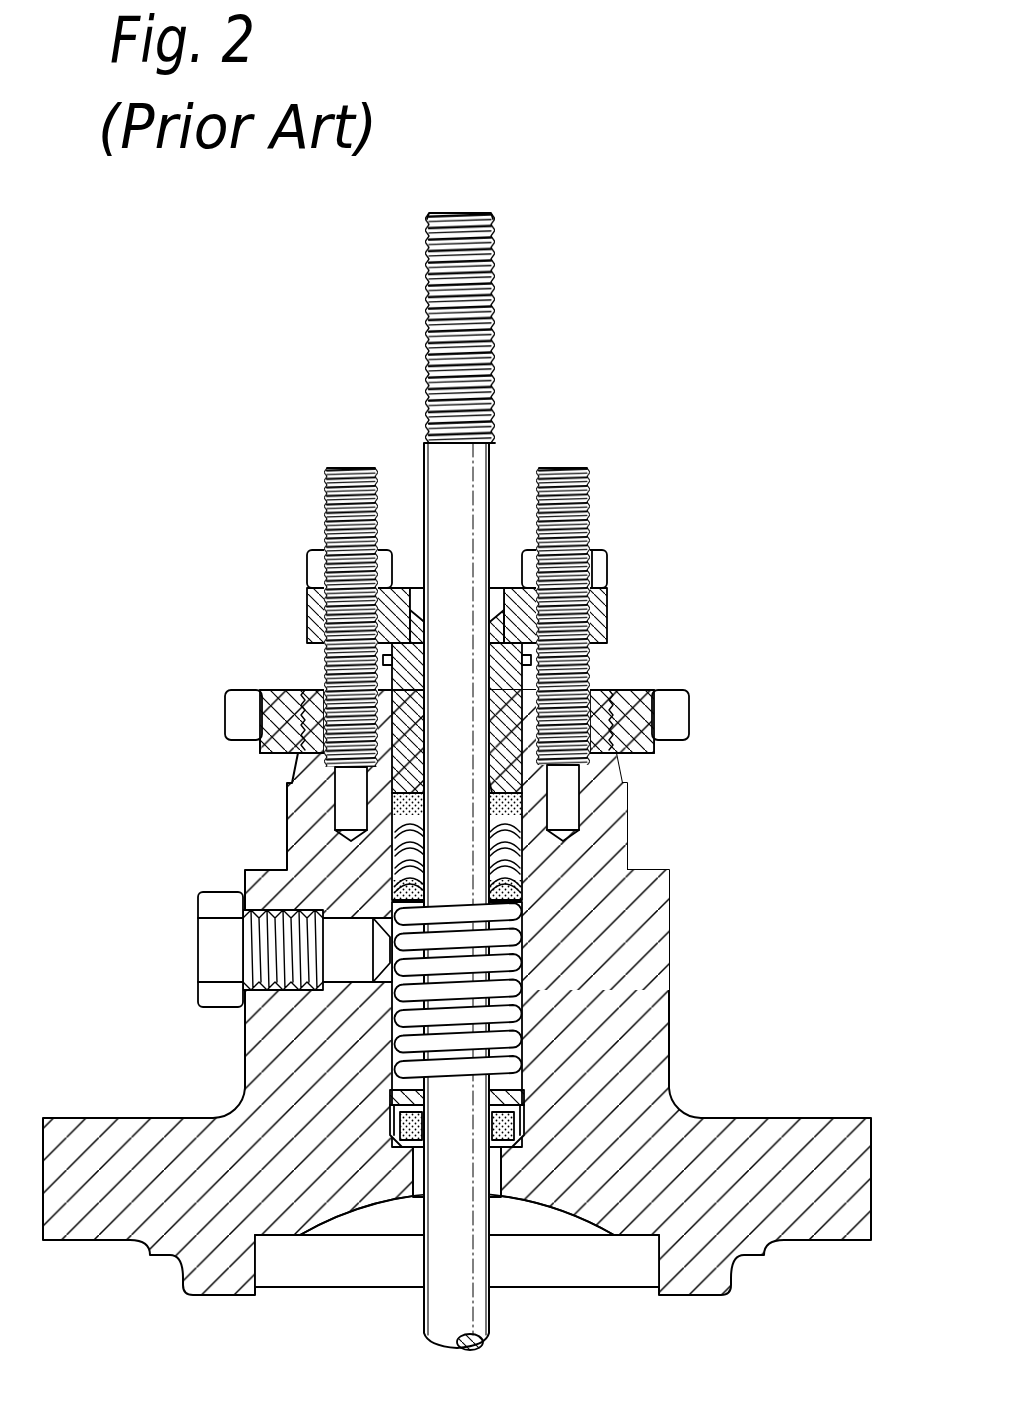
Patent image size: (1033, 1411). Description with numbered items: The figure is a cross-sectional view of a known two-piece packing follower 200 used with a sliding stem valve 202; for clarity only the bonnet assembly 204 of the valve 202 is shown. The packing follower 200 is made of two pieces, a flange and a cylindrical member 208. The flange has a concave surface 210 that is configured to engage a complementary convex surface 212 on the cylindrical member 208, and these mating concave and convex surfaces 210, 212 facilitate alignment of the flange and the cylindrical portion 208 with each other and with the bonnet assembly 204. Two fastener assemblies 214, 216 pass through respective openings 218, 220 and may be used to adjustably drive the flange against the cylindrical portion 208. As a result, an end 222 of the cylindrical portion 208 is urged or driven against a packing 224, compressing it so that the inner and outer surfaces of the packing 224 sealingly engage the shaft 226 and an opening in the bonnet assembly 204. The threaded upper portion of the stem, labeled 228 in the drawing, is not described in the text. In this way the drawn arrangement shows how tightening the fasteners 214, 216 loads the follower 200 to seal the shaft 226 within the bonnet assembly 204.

The two-piece packing follower 200 is at (471, 606).
The sliding stem valve 202 is at (526, 736).
The bonnet assembly 204 is at (705, 1112).
The cylindrical member 208 is at (512, 681).
The concave surface 210 is at (497, 607).
The convex surface 212 is at (330, 632).
The fastener assembly 214 is at (620, 606).
The fastener assembly 216 is at (350, 468).
The opening 218 is at (600, 641).
The opening 220 is at (310, 588).
The end of the cylindrical portion 222 is at (560, 761).
The packing 224 is at (400, 877).
The shaft 226 is at (488, 457).
The threaded end of stem 228 is at (472, 212).